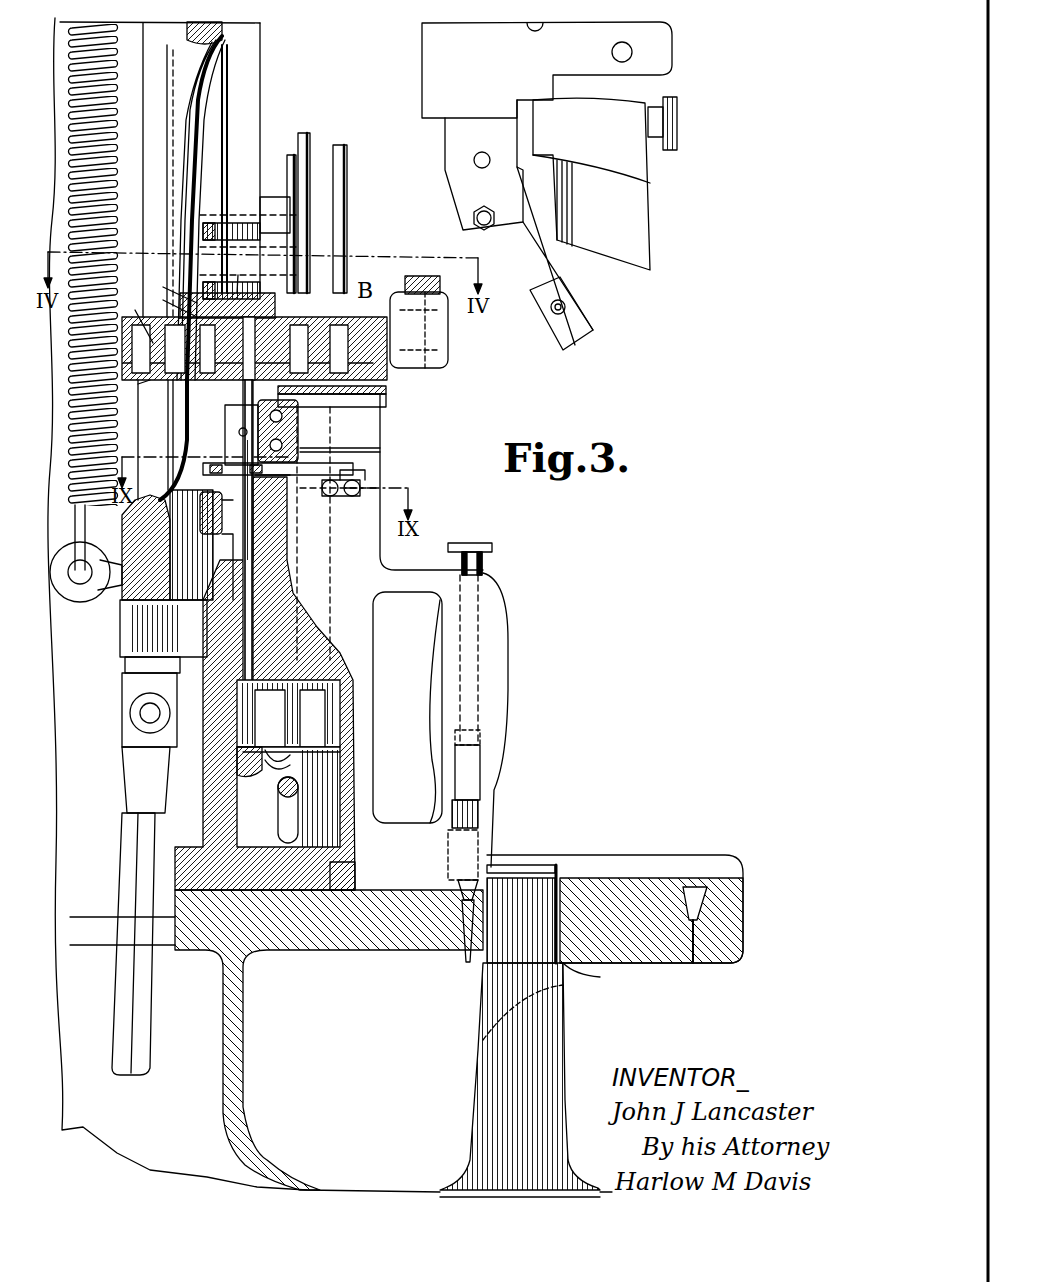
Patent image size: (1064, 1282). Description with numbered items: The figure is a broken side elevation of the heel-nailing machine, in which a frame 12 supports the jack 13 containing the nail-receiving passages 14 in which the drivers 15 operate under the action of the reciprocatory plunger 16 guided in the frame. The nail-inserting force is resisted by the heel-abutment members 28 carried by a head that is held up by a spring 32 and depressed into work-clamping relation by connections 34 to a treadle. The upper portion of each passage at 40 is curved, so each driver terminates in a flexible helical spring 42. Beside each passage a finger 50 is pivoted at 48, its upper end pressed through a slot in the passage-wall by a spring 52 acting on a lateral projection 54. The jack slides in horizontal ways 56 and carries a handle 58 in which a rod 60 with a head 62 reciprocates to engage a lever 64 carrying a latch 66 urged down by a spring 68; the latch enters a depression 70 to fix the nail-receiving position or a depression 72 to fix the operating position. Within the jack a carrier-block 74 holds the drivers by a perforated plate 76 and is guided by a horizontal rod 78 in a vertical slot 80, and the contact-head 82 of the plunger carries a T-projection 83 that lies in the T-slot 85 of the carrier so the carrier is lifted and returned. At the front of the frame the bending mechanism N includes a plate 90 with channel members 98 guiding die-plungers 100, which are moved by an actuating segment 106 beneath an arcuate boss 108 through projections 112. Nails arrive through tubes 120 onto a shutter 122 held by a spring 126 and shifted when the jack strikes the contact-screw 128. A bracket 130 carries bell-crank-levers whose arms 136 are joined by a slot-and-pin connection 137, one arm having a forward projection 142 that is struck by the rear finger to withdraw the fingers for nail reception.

The frame 12 is at (243, 1043).
The jack 13 is at (375, 624).
The nail-receiving passages 14 is at (327, 597).
The drivers 15 is at (330, 704).
The reciprocatory plunger 16 is at (480, 1186).
The heel-abutment members 28 is at (565, 300).
The spring 32 is at (115, 195).
The connections 34 is at (123, 963).
The curved passage portion 40 is at (253, 377).
The helical spring 42 is at (263, 477).
The pivot 48 is at (240, 433).
The finger 50 is at (237, 428).
The spring 52 is at (343, 492).
The lateral projection 54 is at (355, 480).
The horizontal ways 56 is at (733, 895).
The handle 58 is at (507, 698).
The rod 60 is at (480, 565).
The head 62 is at (487, 543).
The lever 64 is at (462, 793).
The latch 66 is at (478, 905).
The spring 68 is at (453, 840).
The depression 70 is at (478, 913).
The depression 72 is at (713, 910).
The carrier-block 74 is at (343, 780).
The perforated plate 76 is at (343, 752).
The horizontal rod 78 is at (280, 790).
The vertical slot 80 is at (287, 815).
The contact-head 82 is at (500, 990).
The T-projection 83 is at (540, 867).
The T-slot 85 is at (345, 877).
The plate 90 is at (383, 347).
The channel members 98 is at (131, 388).
The die-plunger 100 is at (129, 316).
The actuating segment 106 is at (242, 271).
The arcuate boss 108 is at (164, 284).
The projections 112 is at (164, 301).
The tubes 120 is at (345, 145).
The reciprocatory shutter 122 is at (307, 383).
The spring 126 is at (350, 390).
The adjustable contact-screw 128 is at (253, 407).
The bracket 130 is at (232, 567).
The arm 136 is at (203, 473).
The slot-and-pin connection 137 is at (226, 512).
The forward projection 142 is at (235, 515).
The bracket N is at (267, 415).